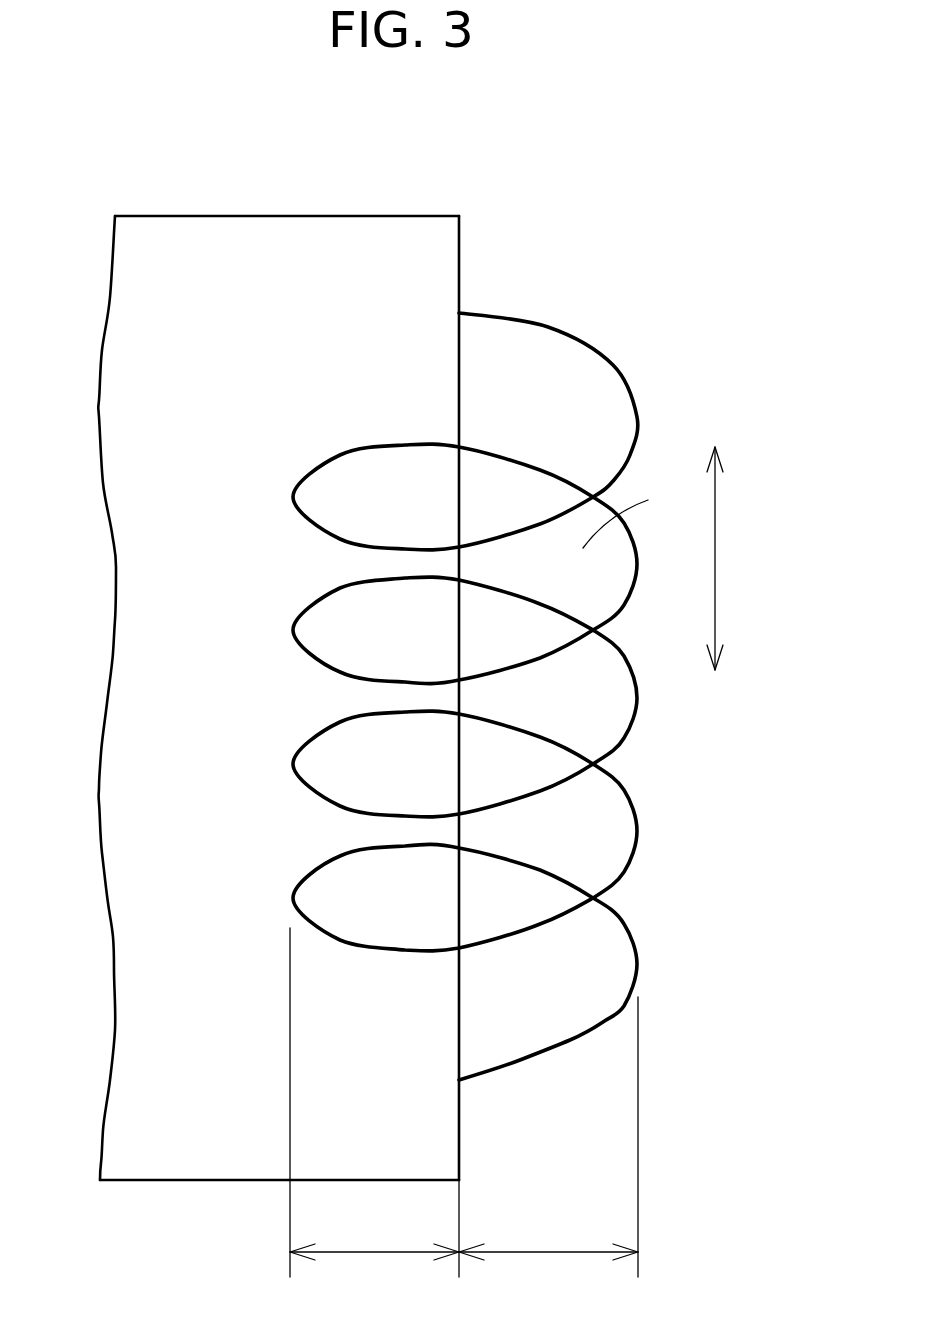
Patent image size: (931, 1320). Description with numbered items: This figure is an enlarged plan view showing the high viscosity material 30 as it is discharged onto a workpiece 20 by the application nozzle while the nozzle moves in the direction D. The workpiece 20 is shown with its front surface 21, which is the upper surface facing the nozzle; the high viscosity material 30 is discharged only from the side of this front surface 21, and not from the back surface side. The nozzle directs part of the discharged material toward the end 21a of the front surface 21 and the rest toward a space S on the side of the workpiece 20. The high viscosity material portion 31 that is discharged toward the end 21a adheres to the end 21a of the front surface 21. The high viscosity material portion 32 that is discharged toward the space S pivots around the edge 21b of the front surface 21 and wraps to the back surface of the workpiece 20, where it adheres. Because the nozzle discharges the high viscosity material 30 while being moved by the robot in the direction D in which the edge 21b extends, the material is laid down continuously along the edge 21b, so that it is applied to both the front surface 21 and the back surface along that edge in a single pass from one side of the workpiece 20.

The workpiece 20 is at (331, 700).
The front surface 21 is at (331, 653).
The end of the front surface 21a is at (380, 233).
The edge of the front surface 21b is at (459, 273).
The high viscosity material 30 is at (637, 835).
The high viscosity material portion 31 is at (365, 1250).
The high viscosity material portion 32 is at (540, 1250).
The space S is at (683, 515).
The direction D is at (715, 555).